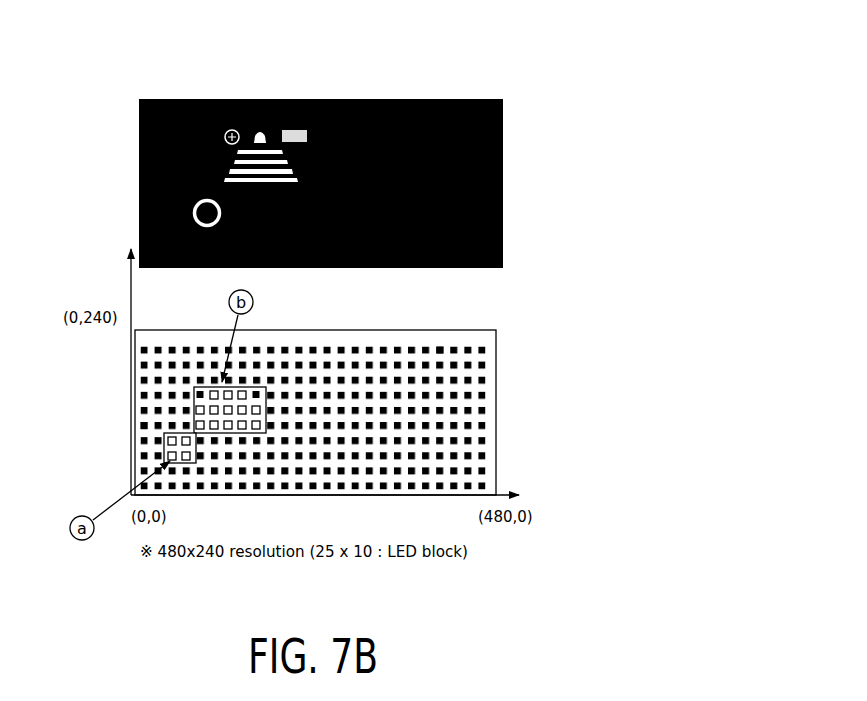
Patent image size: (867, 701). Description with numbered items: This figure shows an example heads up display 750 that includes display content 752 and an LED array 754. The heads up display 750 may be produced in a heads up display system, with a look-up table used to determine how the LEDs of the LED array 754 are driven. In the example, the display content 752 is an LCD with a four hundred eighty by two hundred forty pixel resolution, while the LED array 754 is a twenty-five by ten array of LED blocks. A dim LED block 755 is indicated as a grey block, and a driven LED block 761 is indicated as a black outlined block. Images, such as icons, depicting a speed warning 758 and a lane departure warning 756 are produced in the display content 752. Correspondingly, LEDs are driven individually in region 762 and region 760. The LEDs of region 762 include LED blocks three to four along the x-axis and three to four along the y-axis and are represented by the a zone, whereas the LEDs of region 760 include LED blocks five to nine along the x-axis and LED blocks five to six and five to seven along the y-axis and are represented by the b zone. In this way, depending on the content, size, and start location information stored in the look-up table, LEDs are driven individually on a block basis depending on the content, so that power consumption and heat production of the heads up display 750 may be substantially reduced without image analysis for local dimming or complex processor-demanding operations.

The heads up display 750 is at (658, 42).
The display content 752 is at (302, 160).
The LED array 754 is at (269, 399).
The dim LED block 755 is at (440, 348).
The lane departure warning 756 is at (264, 119).
The speed warning 758 is at (179, 189).
The region 760 is at (246, 370).
The driven LED block 761 is at (173, 457).
The region 762 is at (149, 427).